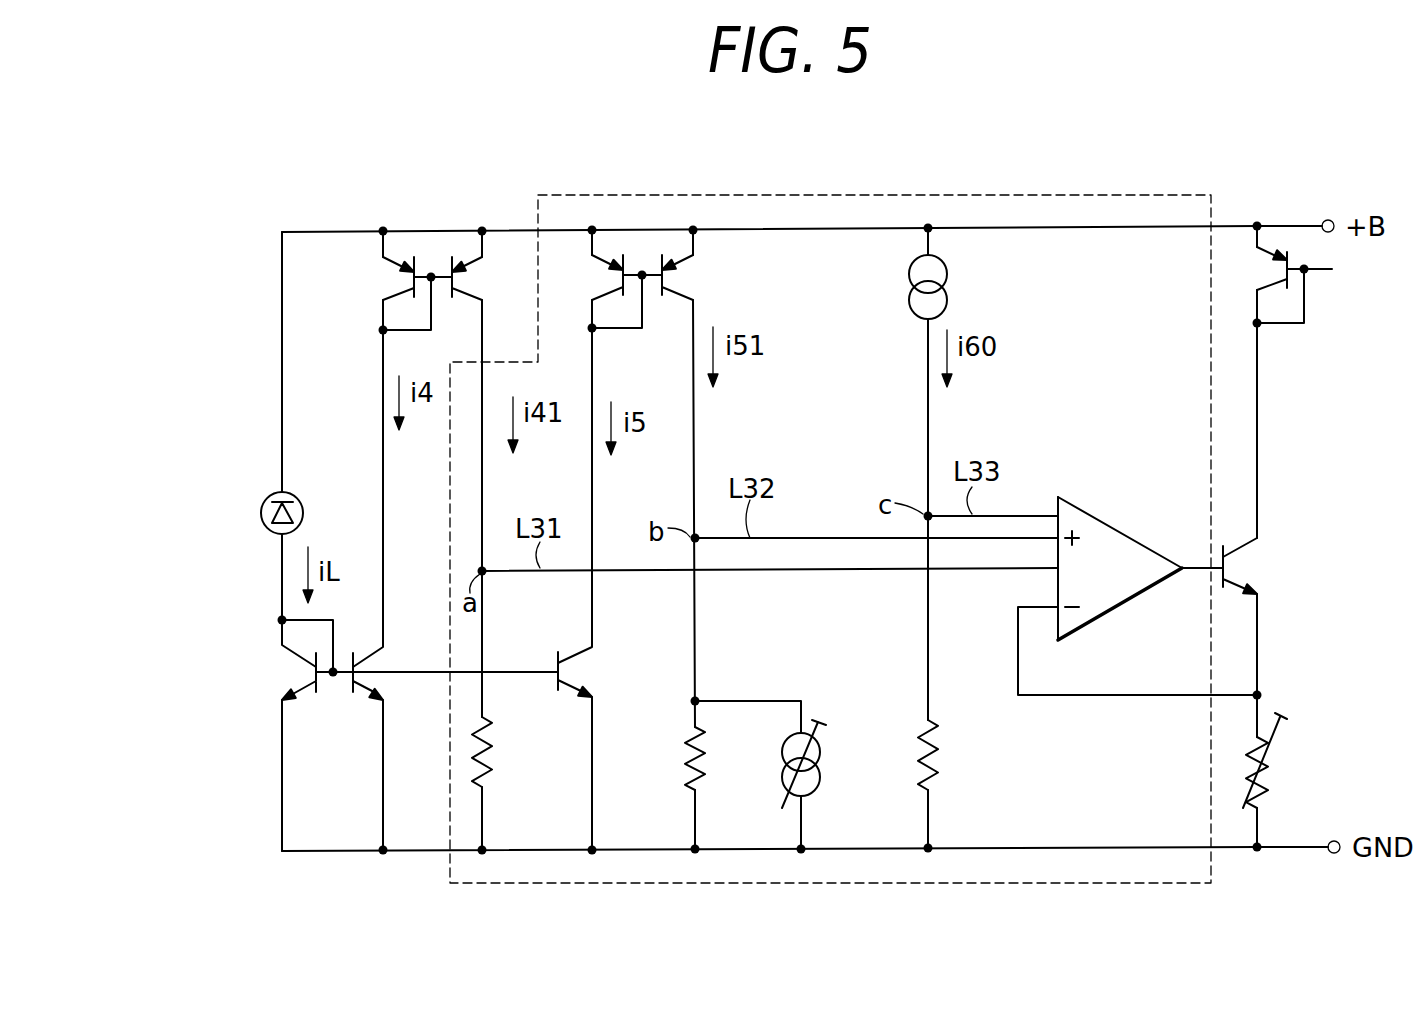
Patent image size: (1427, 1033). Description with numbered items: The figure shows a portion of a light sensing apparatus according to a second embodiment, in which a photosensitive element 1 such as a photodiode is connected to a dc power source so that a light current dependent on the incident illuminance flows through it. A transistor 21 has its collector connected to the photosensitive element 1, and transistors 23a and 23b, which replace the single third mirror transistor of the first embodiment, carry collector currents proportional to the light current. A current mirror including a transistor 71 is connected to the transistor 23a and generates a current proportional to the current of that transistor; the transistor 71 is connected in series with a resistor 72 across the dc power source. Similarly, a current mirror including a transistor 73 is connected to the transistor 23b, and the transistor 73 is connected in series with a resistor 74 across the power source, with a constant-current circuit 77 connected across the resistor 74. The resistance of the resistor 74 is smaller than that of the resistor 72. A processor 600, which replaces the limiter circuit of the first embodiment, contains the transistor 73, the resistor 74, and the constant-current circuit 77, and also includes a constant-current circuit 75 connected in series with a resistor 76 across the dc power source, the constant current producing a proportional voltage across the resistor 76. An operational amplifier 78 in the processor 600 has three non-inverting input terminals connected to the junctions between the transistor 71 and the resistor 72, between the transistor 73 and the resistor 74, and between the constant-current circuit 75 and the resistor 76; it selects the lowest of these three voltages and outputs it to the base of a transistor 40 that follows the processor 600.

The photosensitive element 1 is at (262, 507).
The transistor 21 is at (305, 700).
The transistor 23a is at (363, 700).
The transistor 23b is at (583, 660).
The transistor 40 is at (1243, 553).
The transistor 71 is at (472, 265).
The resistor 72 is at (490, 740).
The transistor 73 is at (685, 256).
The resistor 74 is at (705, 742).
The constant-current circuit 75 is at (947, 275).
The resistor 76 is at (940, 755).
The constant-current circuit 77 is at (822, 749).
The operational amplifier 78 is at (1098, 517).
The processor 600 is at (985, 193).